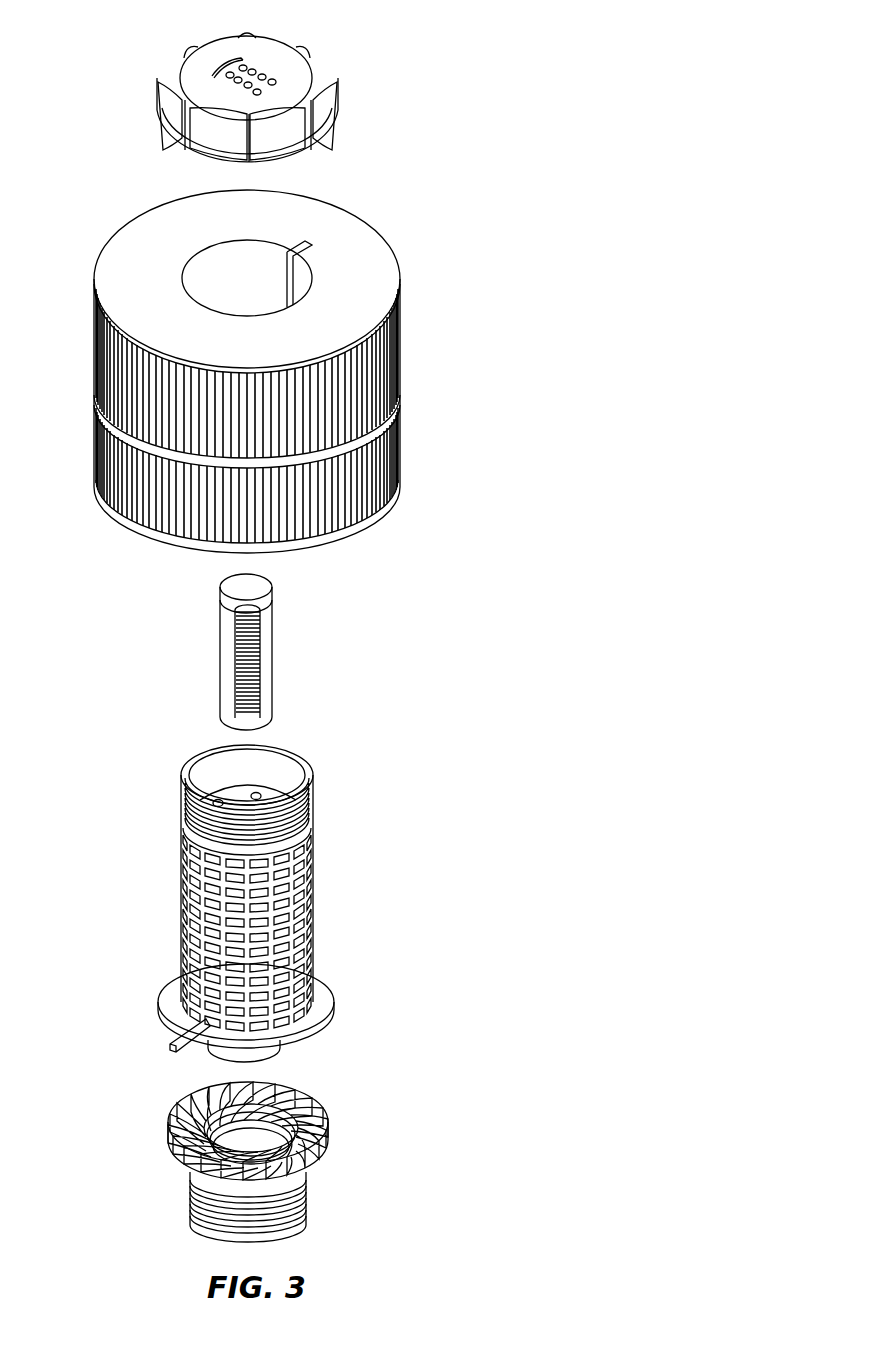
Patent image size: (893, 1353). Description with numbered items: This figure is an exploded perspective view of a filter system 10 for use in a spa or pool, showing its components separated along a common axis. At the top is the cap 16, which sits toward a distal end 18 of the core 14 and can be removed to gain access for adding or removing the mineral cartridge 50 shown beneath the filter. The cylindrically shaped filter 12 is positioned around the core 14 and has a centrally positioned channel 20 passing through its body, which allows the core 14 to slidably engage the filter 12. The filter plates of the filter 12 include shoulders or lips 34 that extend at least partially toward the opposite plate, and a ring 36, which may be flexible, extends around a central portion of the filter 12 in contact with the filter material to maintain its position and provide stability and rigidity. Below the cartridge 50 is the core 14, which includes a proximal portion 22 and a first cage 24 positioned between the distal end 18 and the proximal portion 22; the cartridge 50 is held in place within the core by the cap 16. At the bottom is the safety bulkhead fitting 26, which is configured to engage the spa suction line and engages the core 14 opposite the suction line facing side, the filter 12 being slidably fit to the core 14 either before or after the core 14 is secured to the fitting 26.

The filter system 10 is at (495, 93).
The filter 12 is at (258, 367).
The core 14 is at (258, 1013).
The cap 16 is at (290, 73).
The distal end 18 is at (278, 888).
The channel 20 is at (218, 278).
The proximal portion 22 is at (158, 975).
The first cage 24 is at (310, 912).
The fitting 26 is at (315, 1170).
The lips 34 is at (100, 348).
The ring 36 is at (397, 408).
The mineral cartridge 50 is at (275, 652).